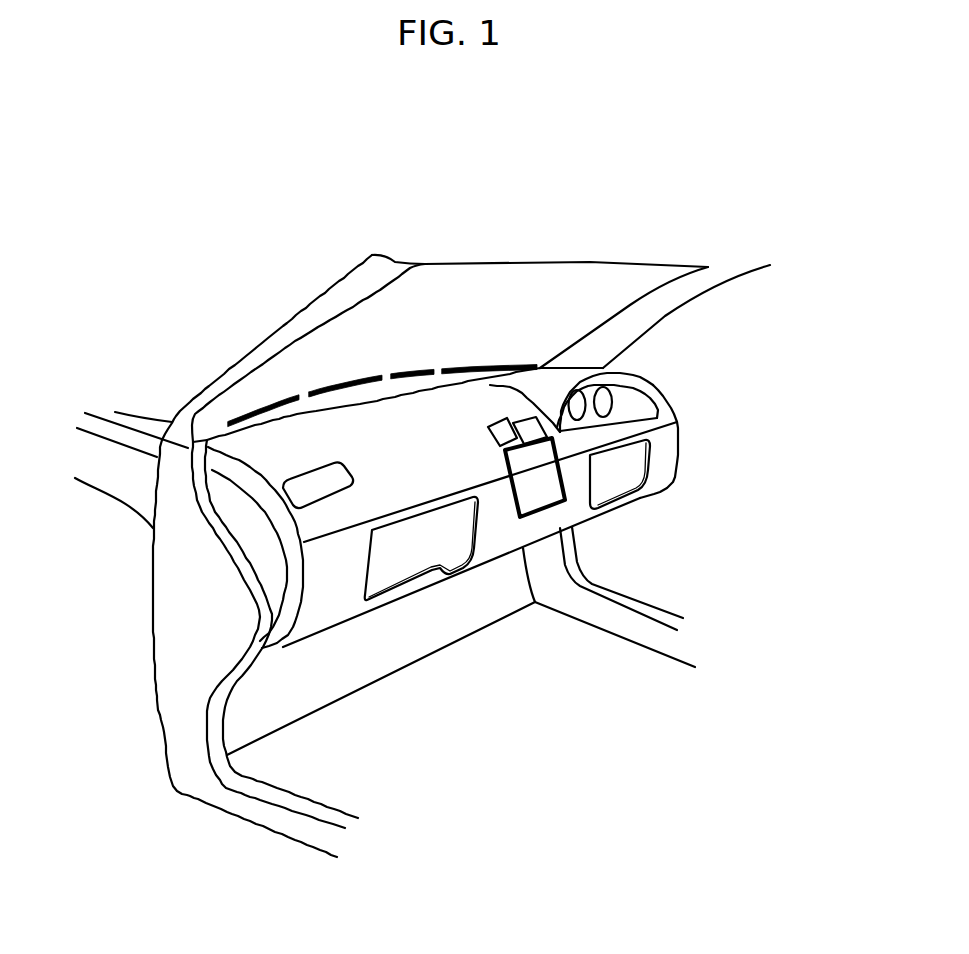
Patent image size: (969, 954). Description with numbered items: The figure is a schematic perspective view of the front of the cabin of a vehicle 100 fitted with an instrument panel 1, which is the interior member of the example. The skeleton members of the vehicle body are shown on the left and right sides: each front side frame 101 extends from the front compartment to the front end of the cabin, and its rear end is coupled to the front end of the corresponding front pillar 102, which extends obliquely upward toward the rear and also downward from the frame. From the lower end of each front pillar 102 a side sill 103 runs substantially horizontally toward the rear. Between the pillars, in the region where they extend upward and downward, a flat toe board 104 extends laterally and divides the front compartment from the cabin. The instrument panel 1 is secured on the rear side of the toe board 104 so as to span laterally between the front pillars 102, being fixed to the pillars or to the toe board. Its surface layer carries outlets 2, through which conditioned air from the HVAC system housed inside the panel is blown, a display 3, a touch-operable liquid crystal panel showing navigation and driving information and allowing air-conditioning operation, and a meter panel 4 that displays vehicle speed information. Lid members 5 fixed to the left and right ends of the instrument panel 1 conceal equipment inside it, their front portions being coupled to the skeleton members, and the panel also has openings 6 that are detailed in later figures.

The vehicle 100 is at (193, 188).
The front side frame 101 is at (105, 467).
The front pillar 102 is at (292, 336).
The side sill 103 is at (270, 829).
The toe board 104 is at (483, 603).
The instrument panel 1 is at (679, 415).
The outlet 2 is at (311, 480).
The display 3 is at (542, 493).
The meter panel 4 is at (623, 395).
The lid member 5 is at (268, 583).
The opening 6 is at (650, 469).